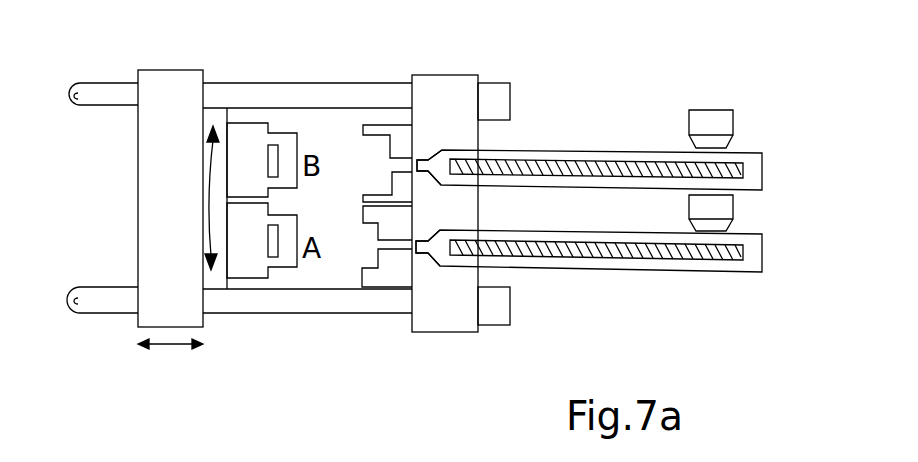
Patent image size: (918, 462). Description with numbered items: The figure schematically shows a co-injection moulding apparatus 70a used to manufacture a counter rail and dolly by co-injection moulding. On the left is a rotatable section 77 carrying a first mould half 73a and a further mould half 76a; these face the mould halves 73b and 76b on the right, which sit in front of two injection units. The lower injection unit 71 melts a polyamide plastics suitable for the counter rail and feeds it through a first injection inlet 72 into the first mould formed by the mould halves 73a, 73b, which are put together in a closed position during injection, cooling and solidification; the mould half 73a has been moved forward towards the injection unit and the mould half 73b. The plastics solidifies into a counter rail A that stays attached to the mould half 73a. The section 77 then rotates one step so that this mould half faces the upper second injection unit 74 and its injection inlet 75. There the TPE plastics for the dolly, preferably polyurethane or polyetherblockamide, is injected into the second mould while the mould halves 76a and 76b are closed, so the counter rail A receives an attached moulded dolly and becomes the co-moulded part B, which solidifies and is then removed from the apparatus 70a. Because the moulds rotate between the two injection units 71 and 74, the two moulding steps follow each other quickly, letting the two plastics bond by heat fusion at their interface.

The co-injection moulding apparatus 70a is at (607, 221).
The injection unit 71 is at (613, 235).
The first injection inlet 72 is at (415, 245).
The mould half 73a is at (248, 257).
The mould half 73b is at (390, 272).
The second injection unit 74 is at (614, 151).
The injection inlet 75 is at (418, 163).
The mould half 76a is at (248, 140).
The mould half 76b is at (402, 142).
The section 77 is at (213, 115).